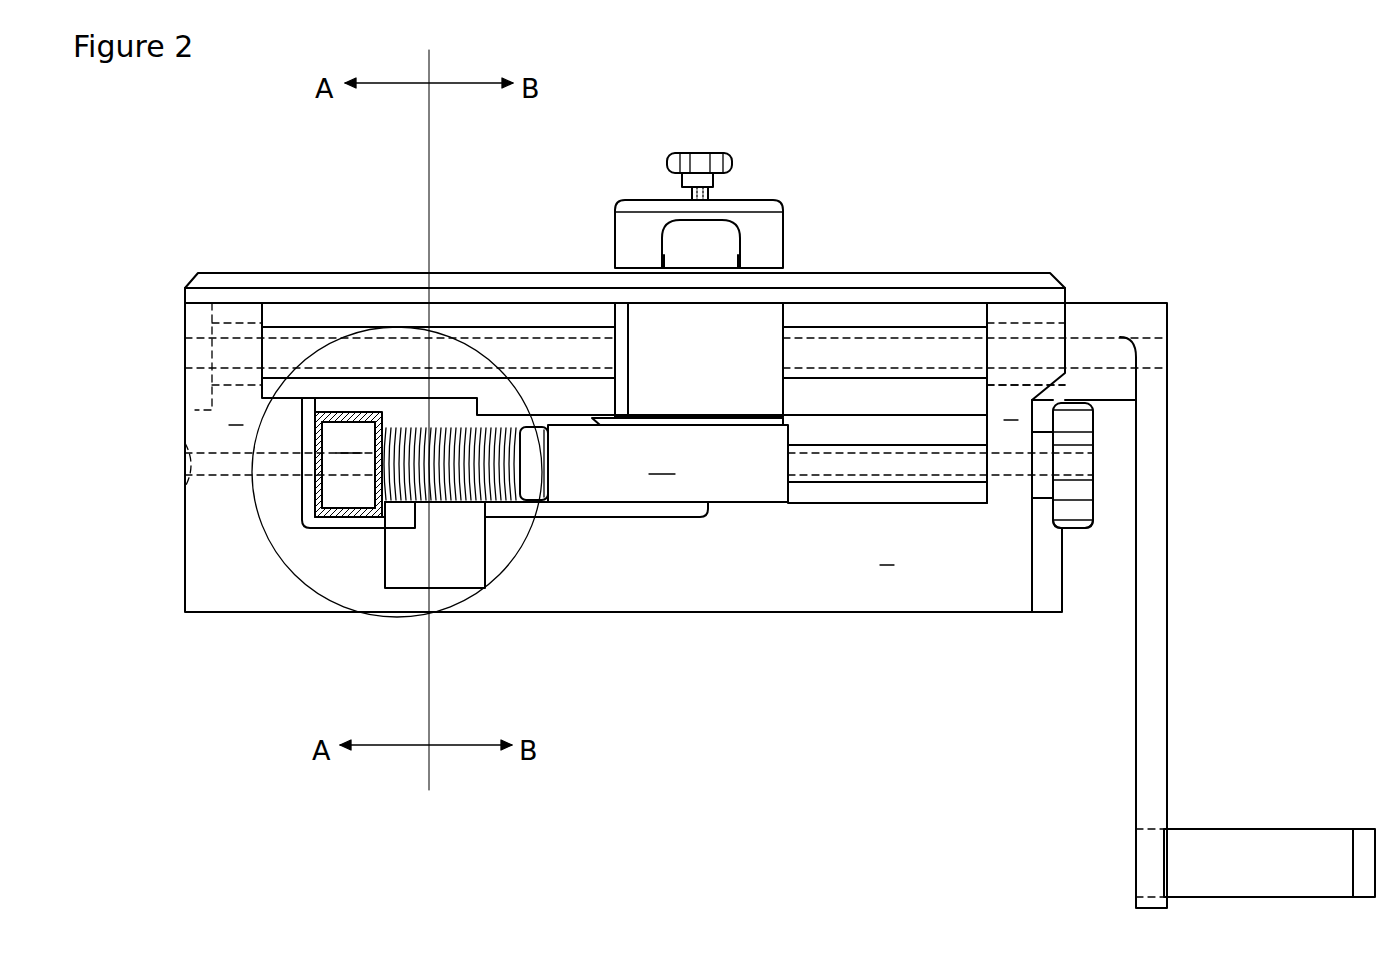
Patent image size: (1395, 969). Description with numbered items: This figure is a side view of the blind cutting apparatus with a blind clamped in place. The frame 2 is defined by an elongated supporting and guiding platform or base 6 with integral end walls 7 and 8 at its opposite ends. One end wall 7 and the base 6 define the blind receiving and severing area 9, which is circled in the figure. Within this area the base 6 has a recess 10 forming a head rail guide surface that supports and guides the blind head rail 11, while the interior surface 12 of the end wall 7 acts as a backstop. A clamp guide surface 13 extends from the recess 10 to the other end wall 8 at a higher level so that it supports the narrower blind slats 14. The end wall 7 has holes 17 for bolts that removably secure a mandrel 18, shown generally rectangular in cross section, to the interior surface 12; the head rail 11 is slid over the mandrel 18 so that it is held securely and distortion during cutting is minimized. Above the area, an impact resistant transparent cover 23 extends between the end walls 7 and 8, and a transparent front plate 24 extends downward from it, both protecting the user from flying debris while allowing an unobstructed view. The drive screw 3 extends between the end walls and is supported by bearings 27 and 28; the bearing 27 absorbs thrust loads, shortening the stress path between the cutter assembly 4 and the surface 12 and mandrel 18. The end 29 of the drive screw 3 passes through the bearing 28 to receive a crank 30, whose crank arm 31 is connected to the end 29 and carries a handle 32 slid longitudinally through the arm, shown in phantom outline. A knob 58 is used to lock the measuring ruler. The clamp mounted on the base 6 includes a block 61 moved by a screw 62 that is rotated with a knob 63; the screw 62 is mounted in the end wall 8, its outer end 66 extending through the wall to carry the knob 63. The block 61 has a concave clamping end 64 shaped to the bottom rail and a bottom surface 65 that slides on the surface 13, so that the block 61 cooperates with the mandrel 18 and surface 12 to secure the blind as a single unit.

The frame 2 is at (775, 618).
The drive screw 3 is at (298, 332).
The cutter assembly 4 is at (786, 197).
The base 6 is at (887, 554).
The end wall 7 is at (608, 364).
The end wall 8 is at (1026, 372).
The blind receiving and severing area 9 is at (310, 592).
The recess 10 is at (358, 524).
The blind head rail 11 is at (380, 427).
The interior surface 12 is at (325, 402).
The clamp guide surface 13 is at (746, 509).
The blind slats 14 is at (476, 436).
The holes 17 is at (182, 463).
The mandrel 18 is at (348, 465).
The cover 23 is at (998, 282).
The front plate 24 is at (918, 320).
The bearing 27 is at (188, 333).
The bearing 28 is at (1058, 333).
The end of the drive screw 29 is at (1157, 353).
The crank 30 is at (1178, 530).
The crank arm 31 is at (1158, 735).
The handle 32 is at (1243, 845).
The knob 58 is at (733, 155).
The block 61 is at (668, 463).
The screw 62 is at (838, 461).
The knob 63 is at (1072, 528).
The clamping end 64 is at (556, 457).
The bottom surface 65 is at (766, 488).
The outer end of the screw 66 is at (1080, 464).